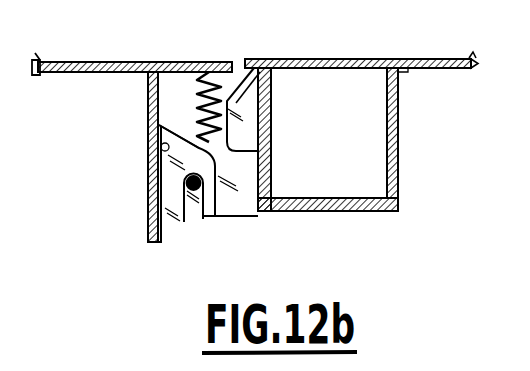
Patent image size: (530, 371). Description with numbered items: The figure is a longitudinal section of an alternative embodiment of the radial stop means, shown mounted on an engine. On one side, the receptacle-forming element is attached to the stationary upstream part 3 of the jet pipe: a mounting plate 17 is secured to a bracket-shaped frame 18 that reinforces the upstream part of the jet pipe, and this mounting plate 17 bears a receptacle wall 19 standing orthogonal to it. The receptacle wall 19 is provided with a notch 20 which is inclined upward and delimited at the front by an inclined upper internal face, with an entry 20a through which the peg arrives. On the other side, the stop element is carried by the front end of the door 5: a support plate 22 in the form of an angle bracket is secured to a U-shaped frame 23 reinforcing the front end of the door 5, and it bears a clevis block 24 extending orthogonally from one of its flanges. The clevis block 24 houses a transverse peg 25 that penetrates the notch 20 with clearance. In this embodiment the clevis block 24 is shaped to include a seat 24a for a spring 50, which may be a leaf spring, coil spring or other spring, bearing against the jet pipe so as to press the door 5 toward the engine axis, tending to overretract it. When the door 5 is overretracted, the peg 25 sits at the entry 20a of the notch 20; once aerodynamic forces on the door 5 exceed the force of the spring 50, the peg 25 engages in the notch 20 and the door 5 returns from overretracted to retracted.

The stationary upstream part 3 is at (80, 62).
The door 5 is at (383, 58).
The spring 50 is at (222, 95).
The bracket-shaped frame 18 is at (146, 93).
The mounting plate 17 is at (150, 143).
The receptacle wall 19 is at (165, 138).
The notch 20 is at (192, 221).
The entry to the notch 20a is at (199, 225).
The peg 25 is at (184, 181).
The clevis block 24 is at (238, 195).
The seat 24a is at (273, 141).
The support plate 22 is at (353, 212).
The U-shaped frame 23 is at (400, 172).